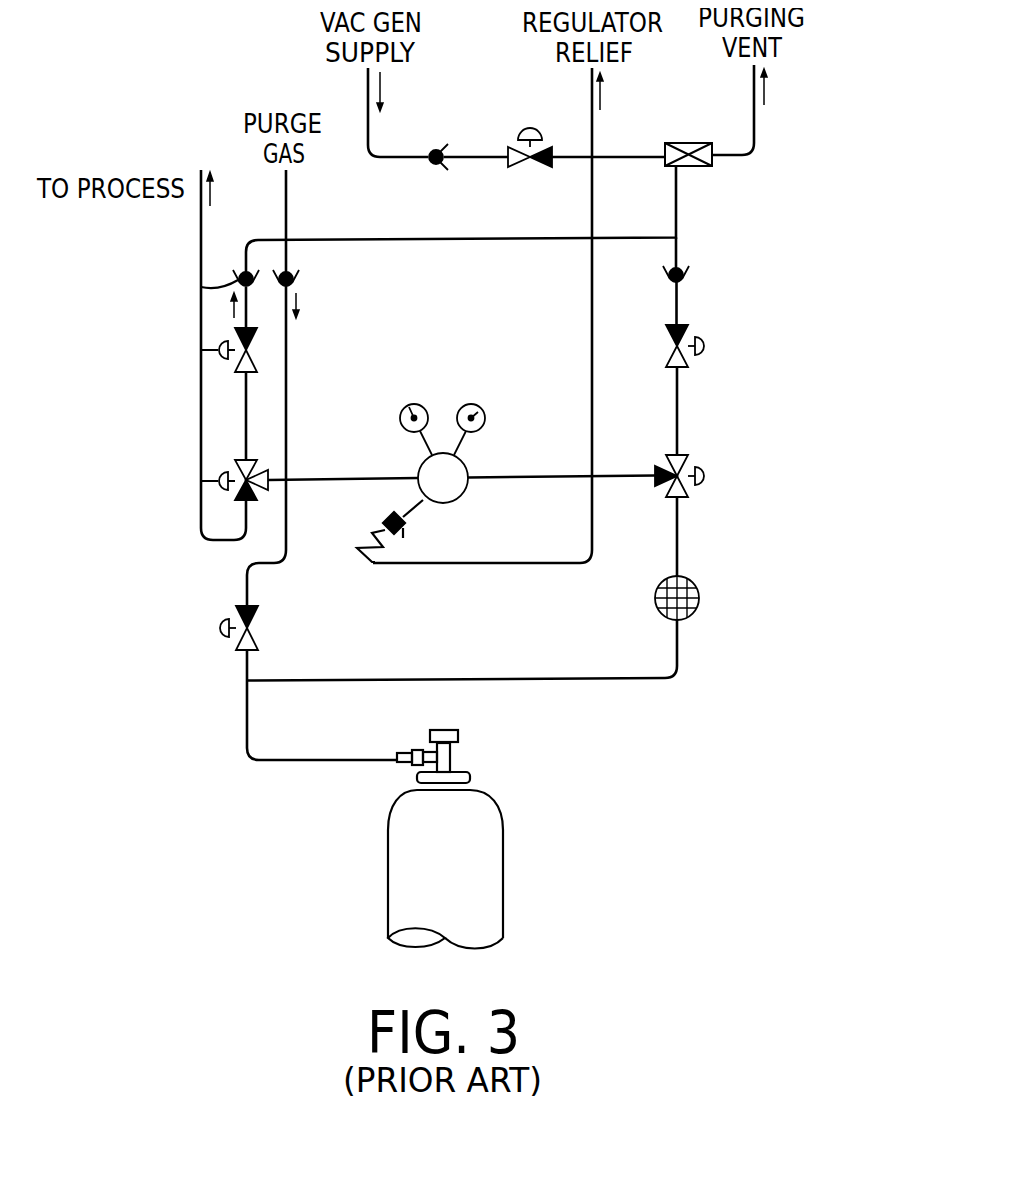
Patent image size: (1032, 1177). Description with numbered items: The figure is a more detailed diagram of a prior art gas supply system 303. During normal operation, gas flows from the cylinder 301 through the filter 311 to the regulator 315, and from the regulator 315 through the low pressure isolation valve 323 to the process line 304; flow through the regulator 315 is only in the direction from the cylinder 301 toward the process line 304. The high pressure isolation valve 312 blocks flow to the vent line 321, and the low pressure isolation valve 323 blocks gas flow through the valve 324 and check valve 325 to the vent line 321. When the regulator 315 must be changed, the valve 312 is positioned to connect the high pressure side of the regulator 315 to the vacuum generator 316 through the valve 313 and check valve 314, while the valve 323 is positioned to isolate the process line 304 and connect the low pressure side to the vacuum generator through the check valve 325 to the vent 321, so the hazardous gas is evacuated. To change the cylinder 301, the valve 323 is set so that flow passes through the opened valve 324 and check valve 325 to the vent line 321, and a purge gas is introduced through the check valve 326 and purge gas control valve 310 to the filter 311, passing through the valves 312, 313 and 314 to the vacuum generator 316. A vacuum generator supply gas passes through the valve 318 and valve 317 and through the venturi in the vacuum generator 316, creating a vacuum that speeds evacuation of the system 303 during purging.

The gas cylinder 301 is at (502, 862).
The gas supply system 303 is at (832, 356).
The process line 304 is at (201, 228).
The purge gas control valve 310 is at (260, 630).
The filter 311 is at (695, 578).
The high pressure isolation valve 312 is at (700, 470).
The valve 313 is at (700, 338).
The check valve 314 is at (688, 278).
The regulator 315 is at (465, 497).
The vacuum generator 316 is at (713, 169).
The valve 317 is at (527, 168).
The valve 318 is at (431, 168).
The vent line 321 is at (754, 128).
The low pressure isolation valve 323 is at (201, 481).
The valve 324 is at (201, 350).
The check valve 325 is at (201, 287).
The check valve 326 is at (294, 275).